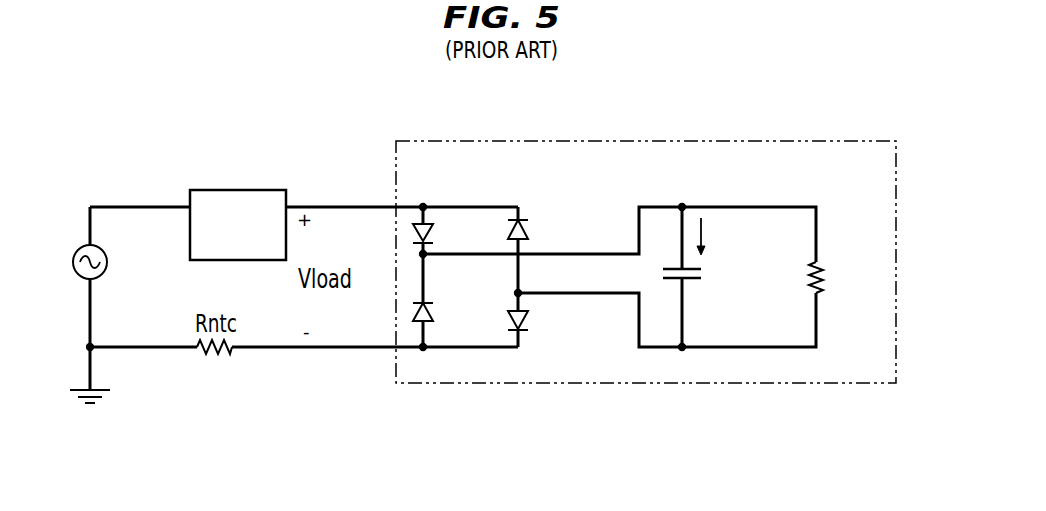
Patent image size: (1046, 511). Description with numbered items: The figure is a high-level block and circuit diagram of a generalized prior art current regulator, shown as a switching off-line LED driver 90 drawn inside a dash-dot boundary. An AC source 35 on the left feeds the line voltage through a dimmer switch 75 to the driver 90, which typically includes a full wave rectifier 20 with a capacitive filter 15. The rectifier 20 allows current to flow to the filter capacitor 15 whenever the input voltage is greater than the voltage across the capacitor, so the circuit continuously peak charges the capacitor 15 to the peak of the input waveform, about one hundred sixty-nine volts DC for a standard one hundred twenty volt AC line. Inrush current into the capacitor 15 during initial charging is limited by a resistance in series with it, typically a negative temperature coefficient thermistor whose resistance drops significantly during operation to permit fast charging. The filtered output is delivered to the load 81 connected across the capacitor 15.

The AC voltage source 35 is at (103, 274).
The dimmer switch 75 is at (207, 190).
The switching off-line LED driver 90 is at (832, 141).
The full wave rectifier 20 is at (477, 233).
The filter capacitor 15 is at (671, 280).
The load 81 is at (829, 295).